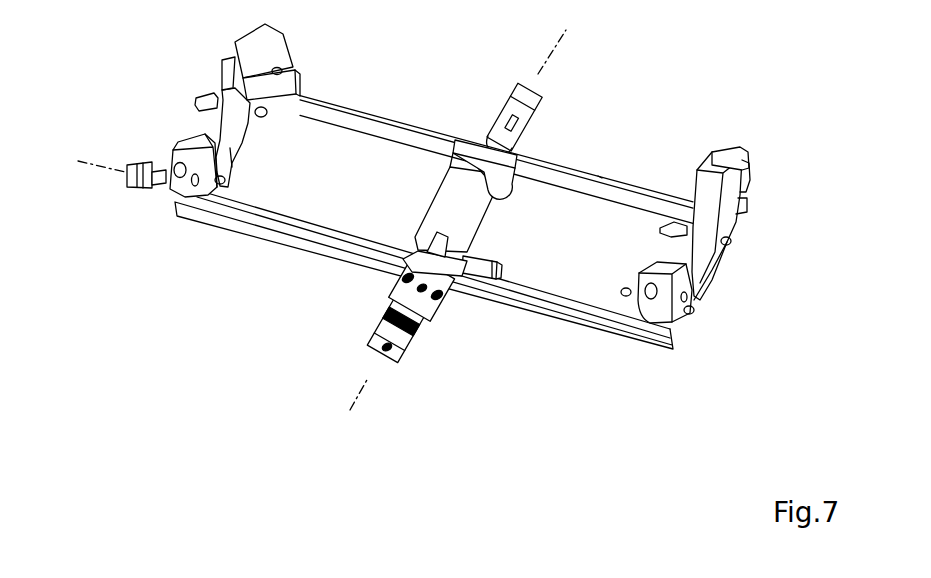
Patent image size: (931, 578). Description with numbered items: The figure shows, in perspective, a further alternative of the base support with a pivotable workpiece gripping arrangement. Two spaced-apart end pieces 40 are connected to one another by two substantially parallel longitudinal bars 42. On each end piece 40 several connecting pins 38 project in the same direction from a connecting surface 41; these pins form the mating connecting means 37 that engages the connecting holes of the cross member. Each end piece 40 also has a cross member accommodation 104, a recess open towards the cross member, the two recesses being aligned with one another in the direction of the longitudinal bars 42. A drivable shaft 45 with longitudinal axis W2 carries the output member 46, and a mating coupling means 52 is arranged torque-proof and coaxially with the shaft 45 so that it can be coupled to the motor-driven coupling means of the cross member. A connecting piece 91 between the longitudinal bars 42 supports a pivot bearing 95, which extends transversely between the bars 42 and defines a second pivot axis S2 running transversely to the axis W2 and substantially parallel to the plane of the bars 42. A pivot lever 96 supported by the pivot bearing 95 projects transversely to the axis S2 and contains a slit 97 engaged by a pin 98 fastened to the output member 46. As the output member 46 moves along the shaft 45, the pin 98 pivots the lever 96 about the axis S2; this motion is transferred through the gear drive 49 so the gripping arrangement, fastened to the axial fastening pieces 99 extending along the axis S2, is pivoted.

The mating connecting means 37 is at (625, 222).
The connecting pin 38 is at (162, 156).
The end piece 40 is at (278, 33).
The connecting surface 41 is at (210, 68).
The longitudinal bar 42 is at (343, 105).
The drivable shaft 45 is at (273, 216).
The output member 46 is at (421, 238).
The gear drive 49 is at (490, 260).
The mating coupling means 52 is at (133, 190).
The connecting piece 91 is at (462, 223).
The pivot bearing 95 is at (451, 305).
The pivot lever 96 is at (398, 277).
The slit 97 is at (395, 291).
The pin 98 is at (426, 290).
The axial fastening piece 99 is at (388, 354).
The cross member accommodation 104 is at (230, 148).
The second pivot axis S2 is at (366, 380).
The longitudinal axis of the drivable shaft W2 is at (102, 170).